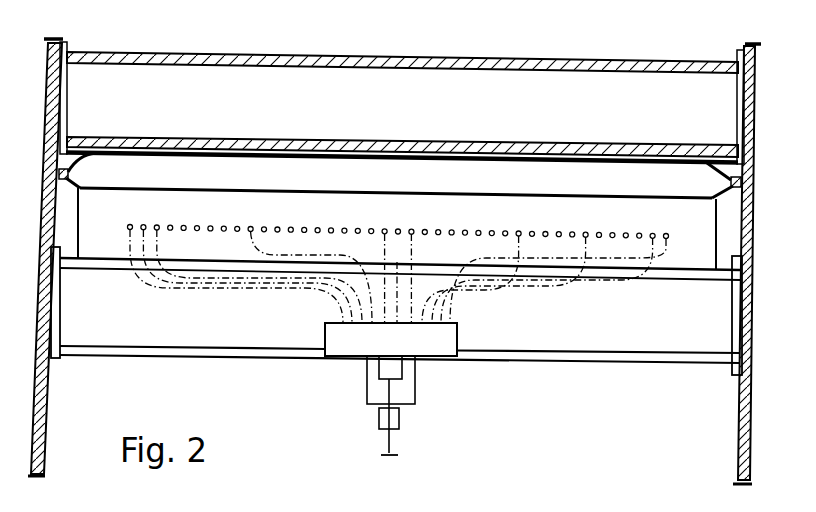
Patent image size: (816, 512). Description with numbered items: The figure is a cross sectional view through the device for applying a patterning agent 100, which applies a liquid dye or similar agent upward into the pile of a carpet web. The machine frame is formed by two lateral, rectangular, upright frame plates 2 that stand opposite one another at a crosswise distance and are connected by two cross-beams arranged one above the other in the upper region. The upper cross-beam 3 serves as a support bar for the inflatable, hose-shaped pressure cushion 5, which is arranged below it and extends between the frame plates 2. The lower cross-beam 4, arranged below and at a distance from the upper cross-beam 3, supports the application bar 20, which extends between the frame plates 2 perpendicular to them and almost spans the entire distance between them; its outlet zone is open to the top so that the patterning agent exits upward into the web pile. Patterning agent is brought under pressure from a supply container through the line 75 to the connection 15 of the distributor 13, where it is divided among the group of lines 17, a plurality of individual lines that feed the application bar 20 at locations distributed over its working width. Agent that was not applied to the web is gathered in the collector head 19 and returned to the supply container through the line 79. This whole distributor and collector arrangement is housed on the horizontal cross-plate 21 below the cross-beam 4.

The device for applying a patterning agent 100 is at (667, 38).
The frame plates 2 is at (45, 408).
The upper cross-beam 3 is at (563, 85).
The pressure cushion 5 is at (713, 148).
The application bar 20 is at (692, 246).
The cross-beam 4 is at (627, 329).
The cross-plate 21 is at (564, 363).
The group of lines 17 is at (519, 236).
The distributor 13 is at (442, 350).
The connection 15 is at (385, 370).
The collector head 19 is at (372, 394).
The line 75 is at (395, 392).
The line 79 is at (384, 438).